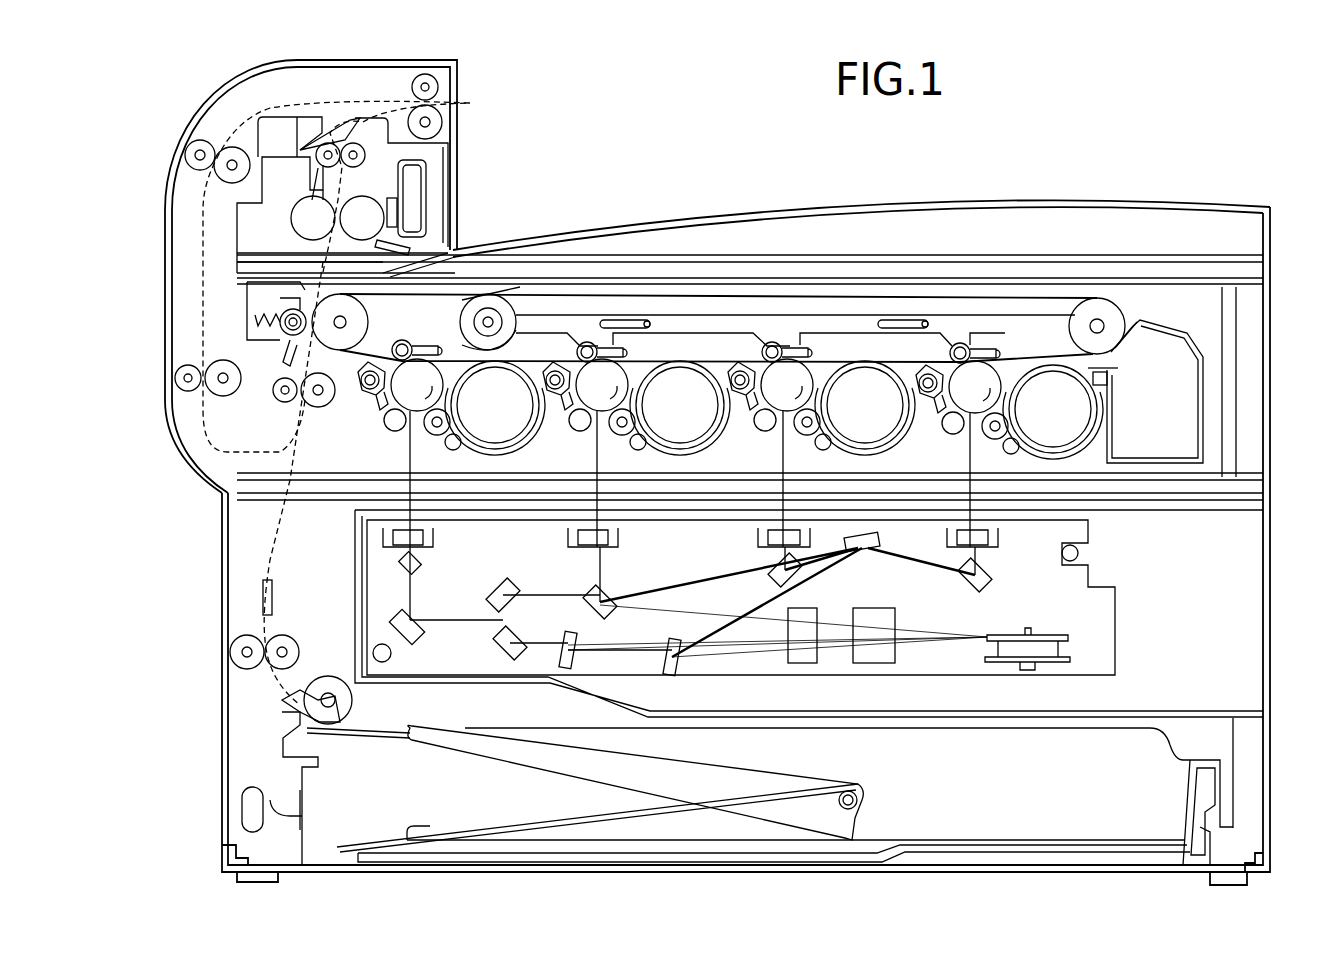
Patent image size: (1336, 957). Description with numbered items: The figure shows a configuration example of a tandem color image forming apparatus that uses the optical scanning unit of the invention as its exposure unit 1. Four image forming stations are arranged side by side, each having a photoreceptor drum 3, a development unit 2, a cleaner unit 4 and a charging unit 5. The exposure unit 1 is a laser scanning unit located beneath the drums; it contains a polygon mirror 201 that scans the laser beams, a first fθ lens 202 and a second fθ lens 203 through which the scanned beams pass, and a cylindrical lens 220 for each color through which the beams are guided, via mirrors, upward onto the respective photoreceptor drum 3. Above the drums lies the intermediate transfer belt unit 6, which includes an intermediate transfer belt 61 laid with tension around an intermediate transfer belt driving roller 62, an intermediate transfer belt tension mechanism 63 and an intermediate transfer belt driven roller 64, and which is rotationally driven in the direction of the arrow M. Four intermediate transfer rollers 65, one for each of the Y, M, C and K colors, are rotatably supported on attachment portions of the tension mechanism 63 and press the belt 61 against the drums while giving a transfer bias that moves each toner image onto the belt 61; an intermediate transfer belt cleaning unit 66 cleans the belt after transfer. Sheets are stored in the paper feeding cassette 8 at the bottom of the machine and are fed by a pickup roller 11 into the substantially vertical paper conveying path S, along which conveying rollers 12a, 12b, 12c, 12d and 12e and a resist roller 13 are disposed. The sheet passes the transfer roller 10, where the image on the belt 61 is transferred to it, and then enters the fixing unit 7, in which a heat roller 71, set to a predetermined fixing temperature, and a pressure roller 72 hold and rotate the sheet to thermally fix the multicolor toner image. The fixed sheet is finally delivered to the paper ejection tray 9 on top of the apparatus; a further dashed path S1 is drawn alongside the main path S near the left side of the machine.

The exposure unit 1 is at (1118, 630).
The development unit 2 is at (512, 436).
The photoreceptor drum 3 is at (418, 359).
The cleaner unit 4 is at (372, 399).
The charging unit 5 is at (394, 431).
The intermediate transfer belt unit 6 is at (675, 295).
The fixing unit 7 is at (383, 155).
The paper feeding cassette 8 is at (538, 803).
The paper ejection tray 9 is at (695, 208).
The transfer roller 10 is at (290, 336).
The pickup roller 11 is at (352, 700).
The conveying roller 12a is at (288, 637).
The conveying roller 12b is at (330, 143).
The conveying roller 12c is at (425, 74).
The conveying roller 12d is at (185, 155).
The conveying roller 12e is at (175, 378).
The resist roller 13 is at (318, 408).
The intermediate transfer belt 61 is at (870, 296).
The intermediate transfer belt driving roller 62 is at (360, 313).
The intermediate transfer belt tension mechanism 63 is at (537, 310).
The intermediate transfer belt driven roller 64 is at (1097, 298).
The intermediate transfer roller 65 is at (392, 357).
The intermediate transfer belt cleaning unit 66 is at (1197, 382).
The heat roller 71 is at (382, 217).
The pressure roller 72 is at (295, 222).
The polygon mirror 201 is at (1050, 633).
The first fθ lens 202 is at (896, 619).
The second fθ lens 203 is at (810, 610).
The cylindrical lens 220 is at (417, 545).
The paper conveying path S is at (282, 533).
The duplex conveying path S1 is at (203, 284).
The arrow M is at (848, 305).